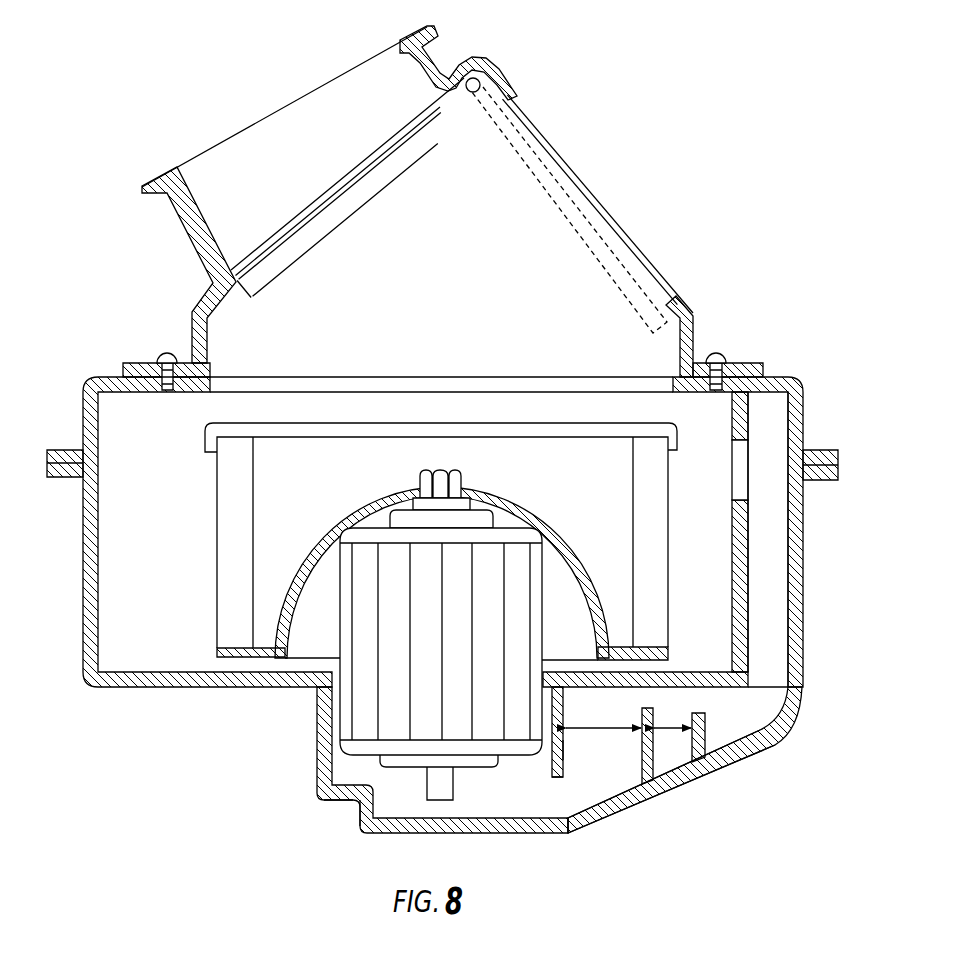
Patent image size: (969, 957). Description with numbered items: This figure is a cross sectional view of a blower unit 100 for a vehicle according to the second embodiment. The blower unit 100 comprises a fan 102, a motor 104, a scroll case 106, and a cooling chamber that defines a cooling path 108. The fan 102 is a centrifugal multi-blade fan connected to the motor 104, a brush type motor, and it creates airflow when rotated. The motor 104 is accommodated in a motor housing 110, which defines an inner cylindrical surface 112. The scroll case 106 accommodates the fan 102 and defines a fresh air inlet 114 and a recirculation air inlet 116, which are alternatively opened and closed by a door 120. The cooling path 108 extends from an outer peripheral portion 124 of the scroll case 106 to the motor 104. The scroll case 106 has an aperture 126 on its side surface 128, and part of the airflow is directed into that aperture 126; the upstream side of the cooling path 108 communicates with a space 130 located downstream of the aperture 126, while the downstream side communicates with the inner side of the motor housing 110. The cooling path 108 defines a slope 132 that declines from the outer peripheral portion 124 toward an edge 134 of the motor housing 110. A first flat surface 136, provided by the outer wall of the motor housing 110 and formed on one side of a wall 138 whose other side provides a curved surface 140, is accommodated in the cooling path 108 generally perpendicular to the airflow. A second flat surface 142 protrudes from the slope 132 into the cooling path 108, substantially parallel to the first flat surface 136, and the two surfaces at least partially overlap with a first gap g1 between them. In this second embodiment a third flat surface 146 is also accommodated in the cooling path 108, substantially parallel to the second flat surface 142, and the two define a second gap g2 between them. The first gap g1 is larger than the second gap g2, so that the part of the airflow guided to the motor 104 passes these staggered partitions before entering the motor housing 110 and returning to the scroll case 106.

The blower unit 100 is at (810, 359).
The fan 102 is at (670, 482).
The motor 104 is at (338, 628).
The scroll case 106 is at (83, 578).
The cooling path 108 is at (672, 771).
The motor housing 110 is at (317, 742).
The inner cylindrical surface 112 is at (332, 765).
The fresh air inlet 114 is at (283, 227).
The recirculation air inlet 116 is at (673, 298).
The door 120 is at (323, 238).
The outer peripheral portion 124 is at (807, 698).
The aperture 126 is at (737, 497).
The side surface 128 is at (797, 532).
The space 130 is at (772, 592).
The slope 132 is at (614, 790).
The edge 134 is at (566, 834).
The first flat surface 136 is at (563, 748).
The wall 138 is at (558, 778).
The curved surface 140 is at (552, 758).
The second flat surface 142 is at (644, 770).
The third flat surface 146 is at (694, 757).
The first gap g1 is at (603, 711).
The second gap g2 is at (672, 711).